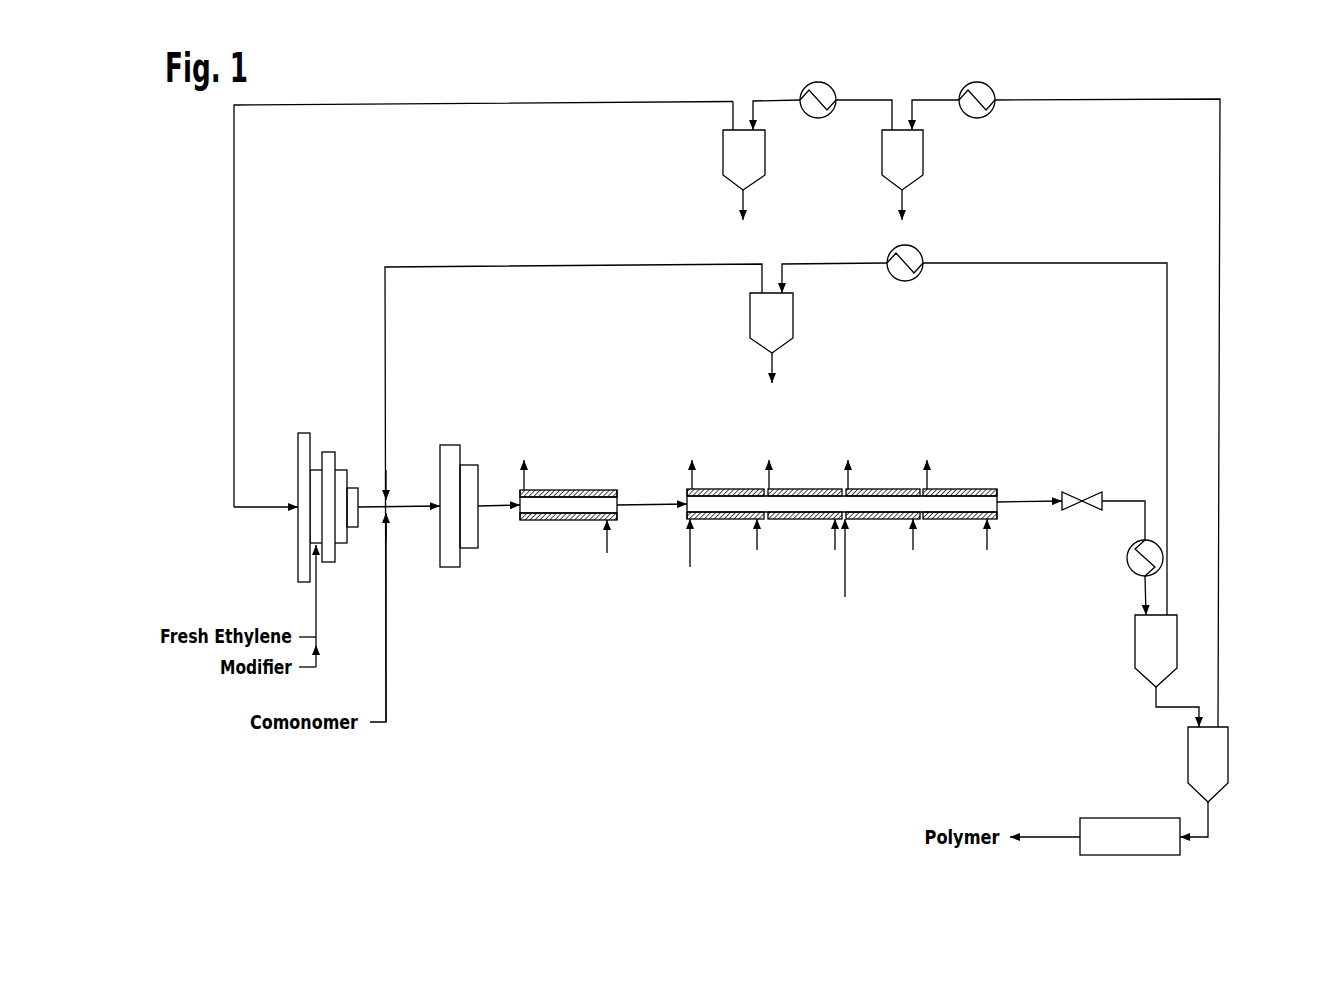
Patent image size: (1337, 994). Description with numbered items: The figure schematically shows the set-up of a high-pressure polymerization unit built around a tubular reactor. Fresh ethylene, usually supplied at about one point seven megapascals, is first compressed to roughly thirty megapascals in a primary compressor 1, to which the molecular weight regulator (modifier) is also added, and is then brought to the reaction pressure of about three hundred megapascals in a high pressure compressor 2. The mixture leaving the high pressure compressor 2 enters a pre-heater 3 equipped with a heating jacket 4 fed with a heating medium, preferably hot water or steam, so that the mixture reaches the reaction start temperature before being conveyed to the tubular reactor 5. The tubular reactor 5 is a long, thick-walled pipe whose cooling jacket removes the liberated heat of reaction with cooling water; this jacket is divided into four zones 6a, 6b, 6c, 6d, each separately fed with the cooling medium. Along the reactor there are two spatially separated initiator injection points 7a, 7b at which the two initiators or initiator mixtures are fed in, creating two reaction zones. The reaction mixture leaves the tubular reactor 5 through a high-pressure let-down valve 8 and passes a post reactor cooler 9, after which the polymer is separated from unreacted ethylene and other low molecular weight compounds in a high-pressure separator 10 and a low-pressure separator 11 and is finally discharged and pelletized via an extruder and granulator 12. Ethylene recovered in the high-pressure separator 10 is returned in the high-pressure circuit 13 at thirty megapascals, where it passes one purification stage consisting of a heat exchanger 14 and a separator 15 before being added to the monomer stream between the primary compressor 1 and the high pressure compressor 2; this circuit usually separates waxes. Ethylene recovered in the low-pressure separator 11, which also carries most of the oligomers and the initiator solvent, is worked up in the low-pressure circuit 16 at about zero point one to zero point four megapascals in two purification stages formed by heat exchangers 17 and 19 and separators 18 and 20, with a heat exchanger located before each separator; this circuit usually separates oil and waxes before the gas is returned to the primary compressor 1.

The primary compressor 1 is at (318, 450).
The high pressure compressor 2 is at (468, 455).
The pre-heater 3 is at (571, 502).
The heating jacket 4 is at (590, 485).
The tubular reactor 5 is at (843, 506).
The cooling jacket zone 6a is at (740, 485).
The cooling jacket zone 6b is at (818, 485).
The cooling jacket zone 6c is at (897, 483).
The cooling jacket zone 6d is at (977, 483).
The initiator injection point 7a is at (691, 522).
The initiator injection point 7b is at (850, 521).
The high-pressure let-down valve 8 is at (1083, 485).
The post reactor cooler 9 is at (1127, 558).
The high-pressure separator 10 is at (1145, 643).
The low-pressure separator 11 is at (1222, 760).
The extruder and granulator 12 is at (1125, 825).
The high-pressure circuit 13 is at (845, 263).
The heat exchanger 14 is at (905, 282).
The separator 15 is at (760, 320).
The low-pressure circuit 16 is at (931, 98).
The heat exchanger 17 is at (977, 82).
The separator 18 is at (913, 162).
The heat exchanger 19 is at (818, 82).
The separator 20 is at (755, 162).